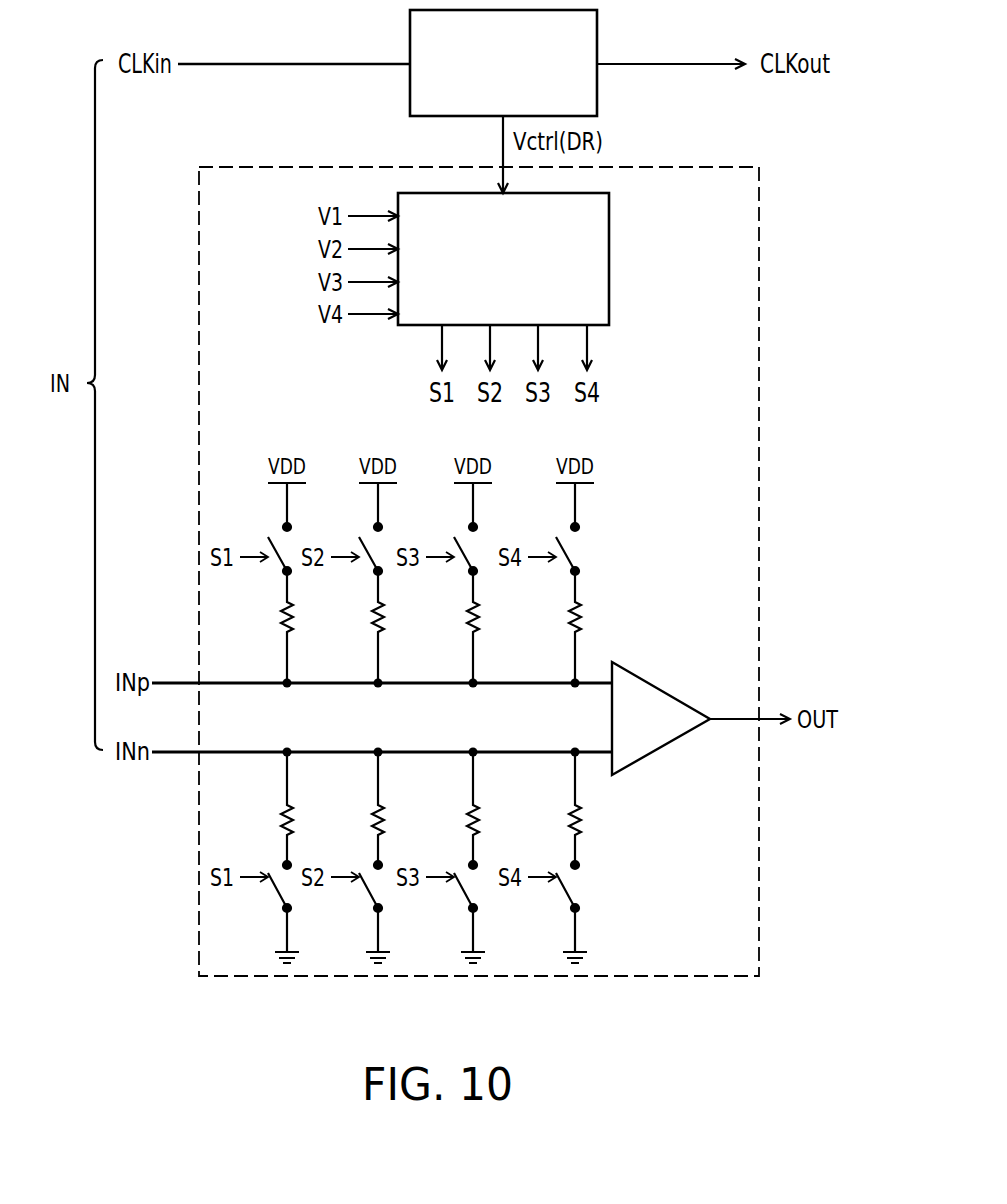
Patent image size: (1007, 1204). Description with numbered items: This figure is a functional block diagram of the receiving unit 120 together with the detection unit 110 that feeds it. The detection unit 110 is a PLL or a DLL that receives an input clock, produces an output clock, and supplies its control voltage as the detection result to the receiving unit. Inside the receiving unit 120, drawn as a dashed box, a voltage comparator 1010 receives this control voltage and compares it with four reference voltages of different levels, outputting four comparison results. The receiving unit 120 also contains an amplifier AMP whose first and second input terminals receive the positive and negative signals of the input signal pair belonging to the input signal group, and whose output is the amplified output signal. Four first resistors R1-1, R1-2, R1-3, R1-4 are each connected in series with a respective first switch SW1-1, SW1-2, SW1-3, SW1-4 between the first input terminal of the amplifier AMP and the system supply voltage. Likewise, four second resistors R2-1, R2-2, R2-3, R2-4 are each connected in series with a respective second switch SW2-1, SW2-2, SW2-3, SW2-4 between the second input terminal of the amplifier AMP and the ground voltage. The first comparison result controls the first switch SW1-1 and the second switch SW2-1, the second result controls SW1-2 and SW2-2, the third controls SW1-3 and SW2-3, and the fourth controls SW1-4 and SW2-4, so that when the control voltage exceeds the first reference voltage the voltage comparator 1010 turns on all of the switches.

The detection unit 110 is at (597, 31).
The voltage comparator 1010 is at (609, 259).
The receiving unit 120 is at (762, 383).
The first switch SW1-1 is at (283, 543).
The first switch SW1-2 is at (374, 543).
The first switch SW1-3 is at (469, 543).
The first switch SW1-4 is at (571, 543).
The second switch SW2-1 is at (283, 893).
The second switch SW2-2 is at (374, 893).
The second switch SW2-3 is at (469, 893).
The second switch SW2-4 is at (571, 893).
The first resistor R1-1 is at (293, 617).
The first resistor R1-2 is at (384, 617).
The first resistor R1-3 is at (479, 617).
The first resistor R1-4 is at (580, 607).
The second resistor R2-1 is at (292, 822).
The second resistor R2-2 is at (383, 822).
The second resistor R2-3 is at (478, 822).
The second resistor R2-4 is at (580, 832).
The amplifier AMP is at (662, 750).